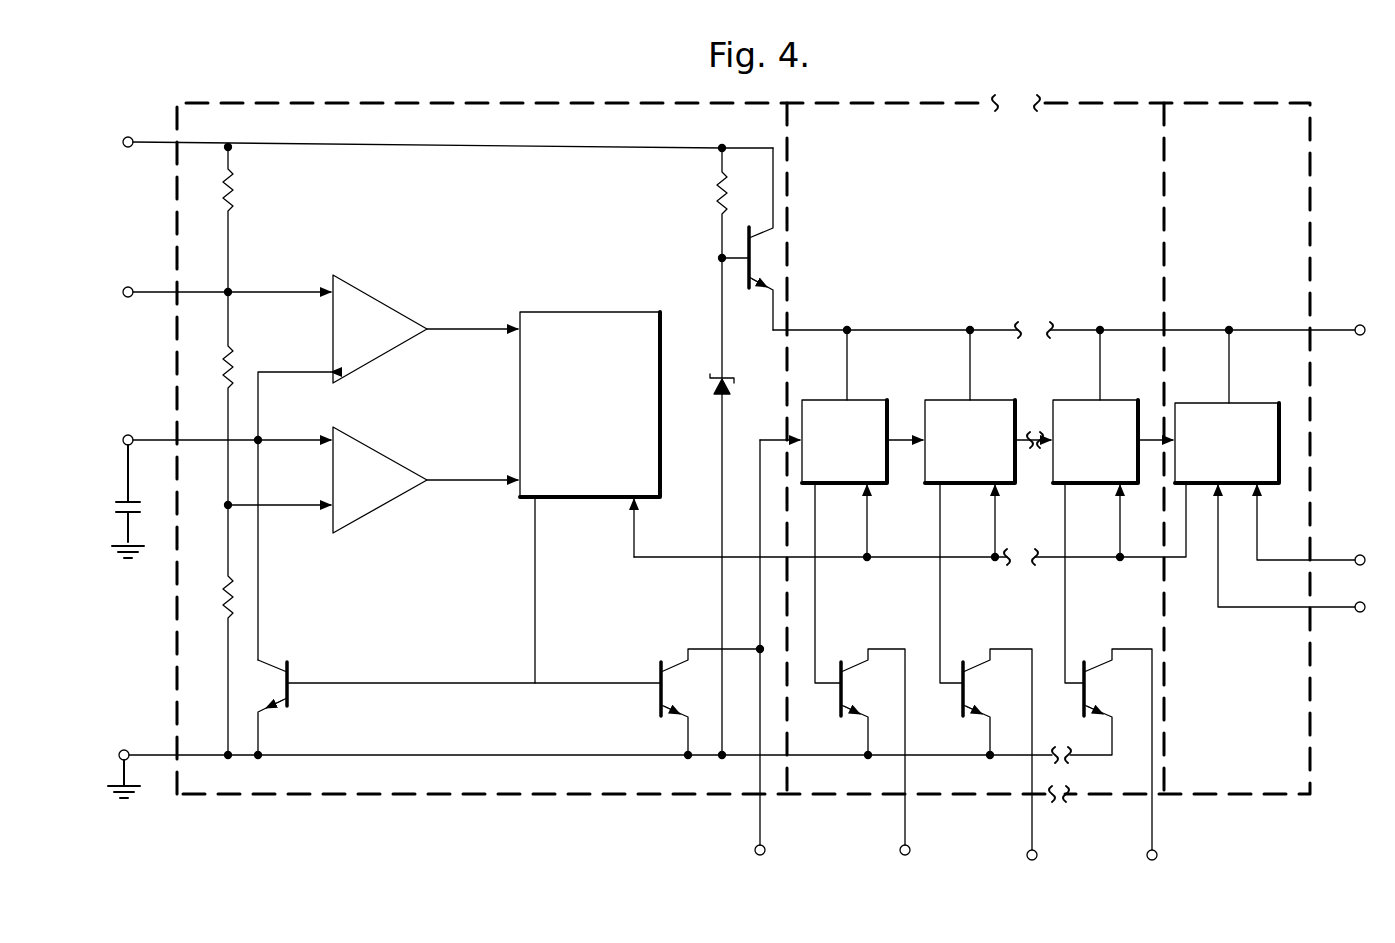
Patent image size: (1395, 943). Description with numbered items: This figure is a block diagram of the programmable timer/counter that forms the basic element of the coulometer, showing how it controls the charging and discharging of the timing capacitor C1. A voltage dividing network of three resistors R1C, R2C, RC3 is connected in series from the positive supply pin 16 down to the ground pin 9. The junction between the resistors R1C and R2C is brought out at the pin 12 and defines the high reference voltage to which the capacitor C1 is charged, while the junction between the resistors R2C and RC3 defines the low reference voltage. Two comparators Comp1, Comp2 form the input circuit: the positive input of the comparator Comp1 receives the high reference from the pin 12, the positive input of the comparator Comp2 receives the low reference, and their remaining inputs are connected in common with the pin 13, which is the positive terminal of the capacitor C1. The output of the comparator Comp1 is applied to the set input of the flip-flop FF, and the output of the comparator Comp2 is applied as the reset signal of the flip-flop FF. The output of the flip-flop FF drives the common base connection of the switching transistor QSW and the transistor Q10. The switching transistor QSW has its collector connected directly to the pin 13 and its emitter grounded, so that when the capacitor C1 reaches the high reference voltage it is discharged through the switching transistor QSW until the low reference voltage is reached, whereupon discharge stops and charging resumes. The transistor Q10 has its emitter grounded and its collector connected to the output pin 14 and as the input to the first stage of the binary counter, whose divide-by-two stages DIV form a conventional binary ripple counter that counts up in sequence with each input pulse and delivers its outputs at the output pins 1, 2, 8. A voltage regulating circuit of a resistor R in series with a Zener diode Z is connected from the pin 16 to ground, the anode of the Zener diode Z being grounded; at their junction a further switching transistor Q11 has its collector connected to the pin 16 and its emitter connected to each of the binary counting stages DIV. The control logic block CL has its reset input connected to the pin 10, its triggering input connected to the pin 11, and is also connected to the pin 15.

The Vcc pin 16 is at (434, 142).
The pin 12 is at (224, 303).
The pin 13 is at (213, 440).
The ground pin 9 is at (578, 771).
The output pin 14 is at (773, 651).
The binary counter output pin 1 is at (871, 672).
The binary counter output pin 2 is at (997, 674).
The binary counter output pin 8 is at (1119, 674).
The pin 15 is at (1073, 353).
The reset pin 10 is at (1315, 536).
The trigger pin 11 is at (1302, 562).
The resistor R1C is at (250, 219).
The resistor R2C is at (250, 398).
The resistor RC3 is at (210, 630).
The capacitor C1 is at (112, 501).
The comparator Comp1 is at (378, 302).
The comparator Comp2 is at (373, 458).
The flip-flop FF is at (596, 320).
The resistor R is at (731, 203).
The switching transistor Q11 is at (755, 239).
The Zener diode Z is at (726, 506).
The control logic block CL is at (1250, 398).
The switching transistor QSW is at (459, 704).
The transistor Q10 is at (686, 702).
The binary counting stage DIV is at (966, 441).